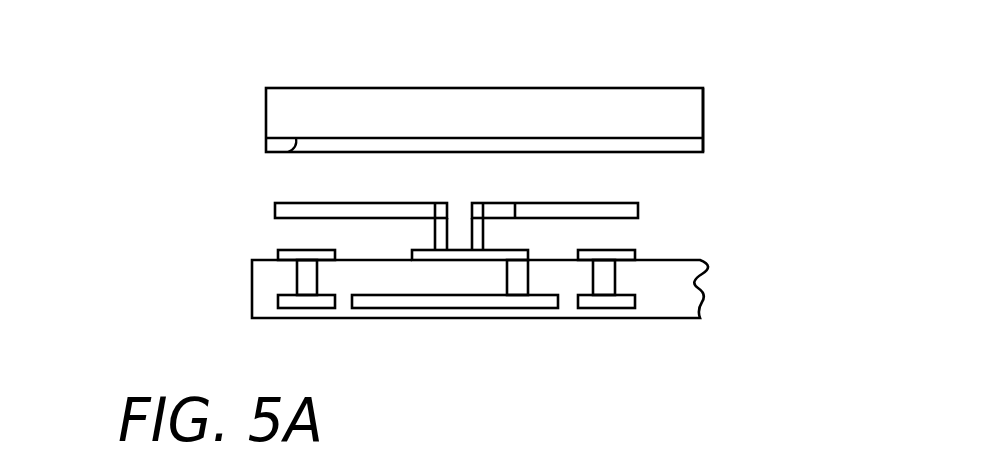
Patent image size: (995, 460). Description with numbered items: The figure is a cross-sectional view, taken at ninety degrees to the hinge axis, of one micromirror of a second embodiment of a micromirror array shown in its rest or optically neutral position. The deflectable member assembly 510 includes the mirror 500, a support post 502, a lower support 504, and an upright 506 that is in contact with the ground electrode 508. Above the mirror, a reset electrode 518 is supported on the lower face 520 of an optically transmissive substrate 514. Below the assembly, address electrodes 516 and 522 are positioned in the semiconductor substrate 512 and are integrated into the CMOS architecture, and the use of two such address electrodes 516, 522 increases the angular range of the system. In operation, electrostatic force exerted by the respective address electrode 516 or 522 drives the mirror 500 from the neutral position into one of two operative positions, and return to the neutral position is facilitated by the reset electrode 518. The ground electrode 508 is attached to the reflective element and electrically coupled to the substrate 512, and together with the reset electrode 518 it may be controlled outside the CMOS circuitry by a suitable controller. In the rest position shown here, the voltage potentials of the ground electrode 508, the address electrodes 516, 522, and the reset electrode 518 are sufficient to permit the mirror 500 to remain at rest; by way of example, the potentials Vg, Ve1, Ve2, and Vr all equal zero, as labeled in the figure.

The mirror 500 is at (617, 203).
The support post 502 is at (484, 229).
The lower support 504 is at (528, 257).
The upright 506 is at (528, 277).
The ground electrode 508 is at (378, 308).
The deflectable member assembly 510 is at (280, 192).
The semiconductor substrate 512 is at (246, 286).
The optically transmissive substrate 514 is at (371, 125).
The address electrode 516 is at (293, 306).
The reset electrode 518 is at (698, 149).
The lower face 520 is at (299, 150).
The address electrode 522 is at (618, 308).